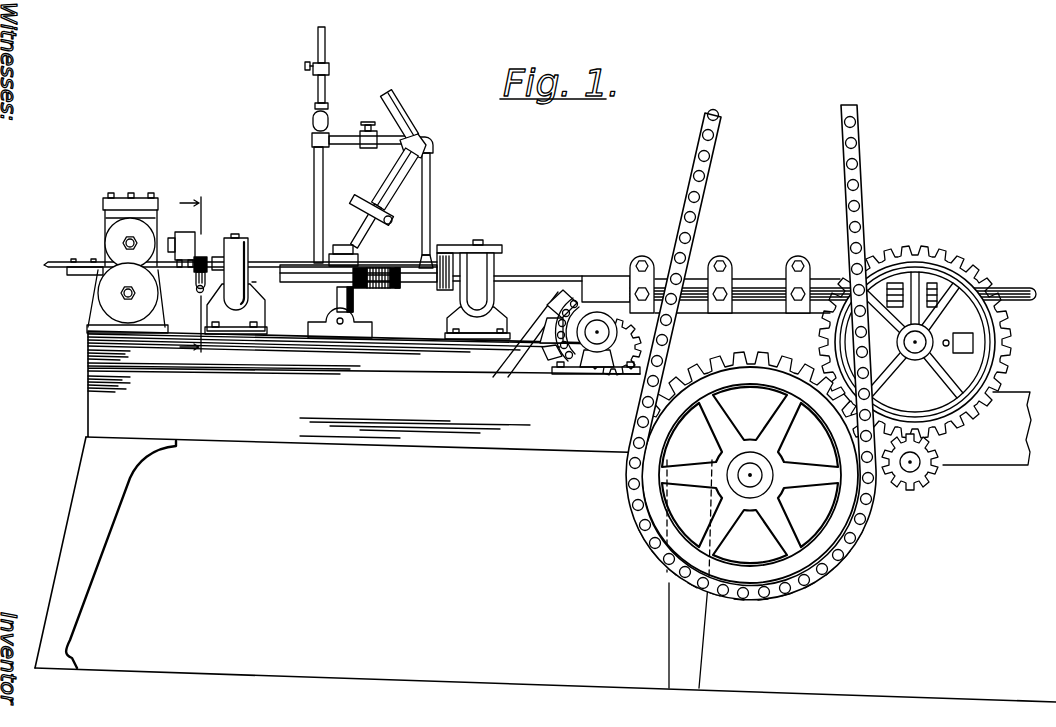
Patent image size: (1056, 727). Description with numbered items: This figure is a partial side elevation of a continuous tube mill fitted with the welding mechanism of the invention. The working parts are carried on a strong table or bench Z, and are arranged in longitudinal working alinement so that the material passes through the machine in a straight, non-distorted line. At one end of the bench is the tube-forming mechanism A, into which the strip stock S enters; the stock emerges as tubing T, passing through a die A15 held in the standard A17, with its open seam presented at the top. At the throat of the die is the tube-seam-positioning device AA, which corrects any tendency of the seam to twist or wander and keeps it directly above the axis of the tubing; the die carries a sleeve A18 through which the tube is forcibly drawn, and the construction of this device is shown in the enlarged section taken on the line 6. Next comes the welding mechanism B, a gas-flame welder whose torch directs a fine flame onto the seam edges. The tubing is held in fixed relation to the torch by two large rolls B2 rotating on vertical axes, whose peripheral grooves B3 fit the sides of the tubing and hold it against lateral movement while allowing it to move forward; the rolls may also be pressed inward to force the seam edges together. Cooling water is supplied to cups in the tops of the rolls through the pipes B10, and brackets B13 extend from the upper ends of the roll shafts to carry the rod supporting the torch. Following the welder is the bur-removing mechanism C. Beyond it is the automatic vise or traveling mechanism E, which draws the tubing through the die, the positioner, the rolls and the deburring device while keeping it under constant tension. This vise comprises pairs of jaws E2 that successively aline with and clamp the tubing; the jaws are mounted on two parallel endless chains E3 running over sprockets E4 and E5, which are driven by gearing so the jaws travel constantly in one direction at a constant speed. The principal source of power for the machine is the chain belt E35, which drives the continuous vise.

The table or bench Z is at (498, 445).
The stock S is at (48, 267).
The tube-forming mechanism A is at (146, 170).
The section line 6- 6 is at (192, 272).
The tube-seam-positioning device AA is at (203, 255).
The sleeve A18 is at (213, 257).
The die A15 is at (249, 266).
The standard A17 is at (250, 318).
The tubing T is at (259, 289).
The pipes B10 is at (317, 193).
The welding mechanism B is at (377, 178).
The brackets B13 is at (372, 240).
The rolls B2 is at (387, 288).
The peripheral grooves B3 is at (402, 284).
The bur-removing mechanism C is at (509, 266).
The automatic vise or traveling mechanism E is at (796, 247).
The jaws E2 is at (493, 377).
The endless chains E3 is at (567, 343).
The sprocket E4 is at (597, 344).
The sprocket E5 is at (916, 345).
The chain belt E35 is at (636, 507).